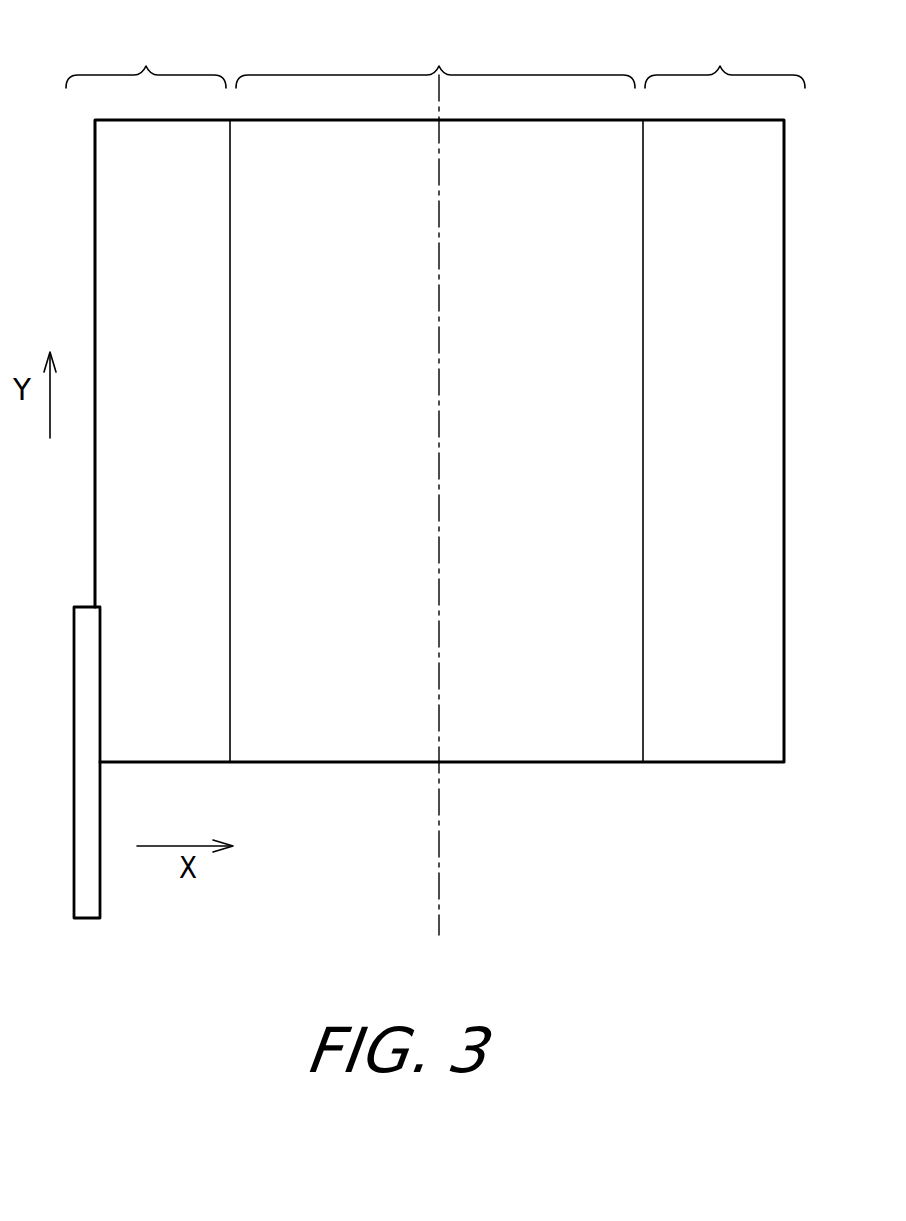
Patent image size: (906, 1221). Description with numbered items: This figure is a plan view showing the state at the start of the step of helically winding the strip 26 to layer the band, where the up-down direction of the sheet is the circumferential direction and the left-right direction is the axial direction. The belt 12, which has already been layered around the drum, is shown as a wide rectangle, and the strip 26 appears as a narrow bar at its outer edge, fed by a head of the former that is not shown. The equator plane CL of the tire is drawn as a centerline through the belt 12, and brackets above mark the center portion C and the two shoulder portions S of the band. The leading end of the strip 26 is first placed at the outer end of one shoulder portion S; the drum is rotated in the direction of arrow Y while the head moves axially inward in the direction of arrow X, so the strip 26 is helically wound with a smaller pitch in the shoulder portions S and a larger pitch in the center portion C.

The belt 12 is at (716, 738).
The strip 26 is at (87, 897).
The shoulder portion S is at (435, 60).
The center portion C is at (435, 60).
The equator plane CL is at (441, 846).